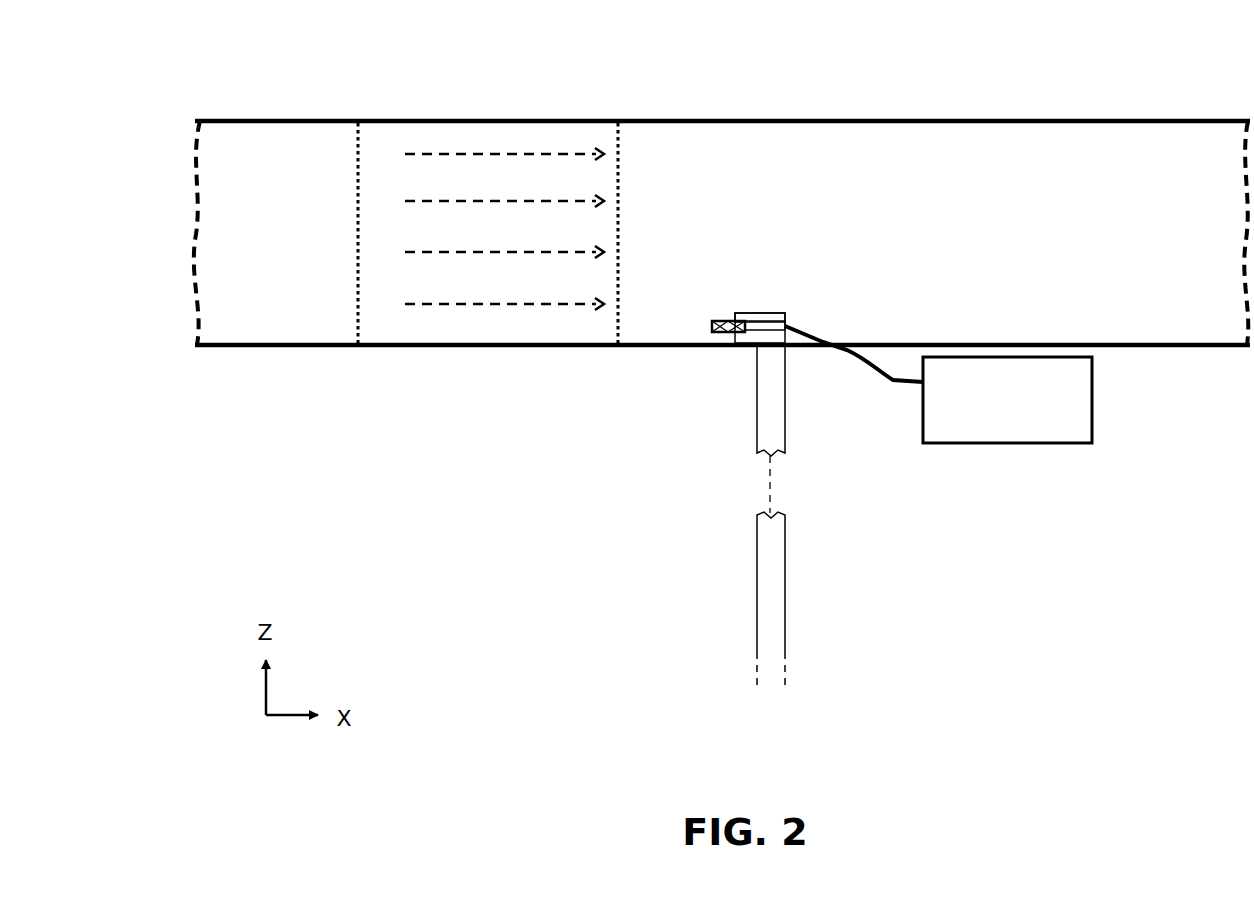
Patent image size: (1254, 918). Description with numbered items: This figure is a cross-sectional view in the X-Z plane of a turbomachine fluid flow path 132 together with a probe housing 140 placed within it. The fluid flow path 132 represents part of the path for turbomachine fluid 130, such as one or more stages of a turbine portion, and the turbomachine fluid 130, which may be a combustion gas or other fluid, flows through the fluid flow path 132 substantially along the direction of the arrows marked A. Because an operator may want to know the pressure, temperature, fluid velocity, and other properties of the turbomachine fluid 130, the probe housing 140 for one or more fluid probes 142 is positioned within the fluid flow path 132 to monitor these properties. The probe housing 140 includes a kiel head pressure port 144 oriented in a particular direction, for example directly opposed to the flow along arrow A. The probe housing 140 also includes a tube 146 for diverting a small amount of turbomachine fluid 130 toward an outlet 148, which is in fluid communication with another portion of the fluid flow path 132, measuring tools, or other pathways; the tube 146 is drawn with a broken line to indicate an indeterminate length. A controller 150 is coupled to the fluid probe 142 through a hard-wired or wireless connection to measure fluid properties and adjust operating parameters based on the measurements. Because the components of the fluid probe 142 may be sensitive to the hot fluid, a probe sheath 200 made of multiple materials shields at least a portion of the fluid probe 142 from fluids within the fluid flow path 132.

The fluid flow path 132 is at (676, 98).
The turbomachine fluid 130 is at (507, 320).
The probe housing 140 is at (788, 298).
The kiel head pressure port 144 is at (743, 313).
The probe sheath 200 is at (718, 333).
The fluid probe 142 is at (776, 330).
The tube 146 is at (762, 418).
The outlet 148 is at (779, 671).
The controller 150 is at (1007, 400).